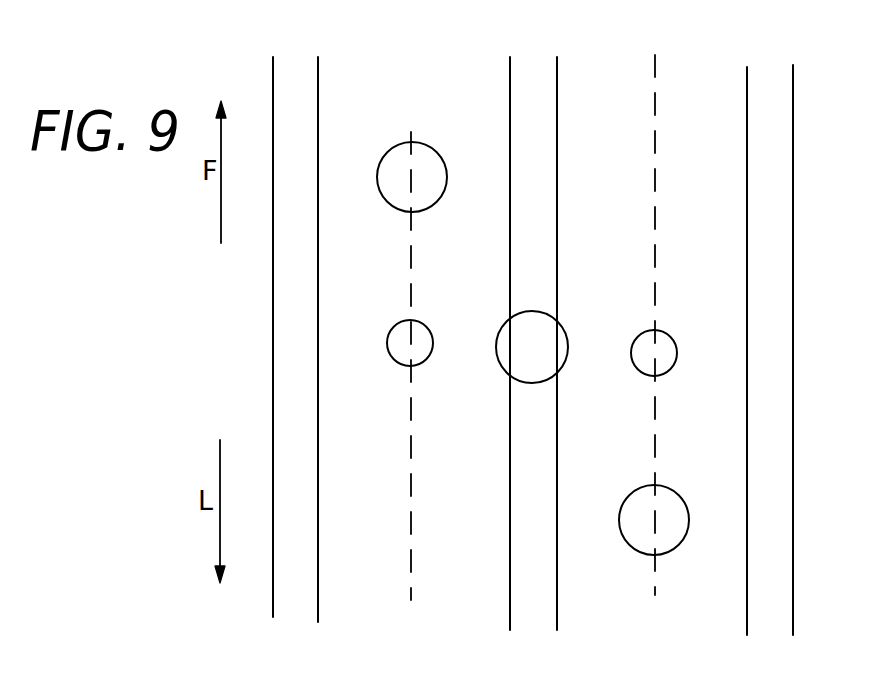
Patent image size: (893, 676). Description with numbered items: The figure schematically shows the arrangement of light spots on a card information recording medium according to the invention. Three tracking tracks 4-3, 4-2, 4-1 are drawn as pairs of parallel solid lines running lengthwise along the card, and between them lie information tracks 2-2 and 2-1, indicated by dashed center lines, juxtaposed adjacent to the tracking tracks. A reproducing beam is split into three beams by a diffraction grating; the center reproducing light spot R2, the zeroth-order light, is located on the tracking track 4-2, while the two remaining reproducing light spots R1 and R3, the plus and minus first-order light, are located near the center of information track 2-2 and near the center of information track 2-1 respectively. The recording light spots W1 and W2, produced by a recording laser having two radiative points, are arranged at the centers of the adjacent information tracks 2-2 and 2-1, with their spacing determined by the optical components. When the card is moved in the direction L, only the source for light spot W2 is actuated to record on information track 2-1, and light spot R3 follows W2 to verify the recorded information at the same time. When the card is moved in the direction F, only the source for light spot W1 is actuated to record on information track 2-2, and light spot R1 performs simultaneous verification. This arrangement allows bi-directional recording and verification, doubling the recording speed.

The tracking track 4-3 is at (297, 82).
The tracking track 4-2 is at (537, 78).
The tracking track 4-1 is at (768, 82).
The information track 2-2 is at (495, 47).
The information track 2-1 is at (733, 48).
The reproducing light spot R1 is at (419, 146).
The recording light spot W1 is at (423, 321).
The center reproducing light spot R2 is at (564, 330).
The recording light spot W2 is at (672, 334).
The reproducing light spot R3 is at (675, 497).